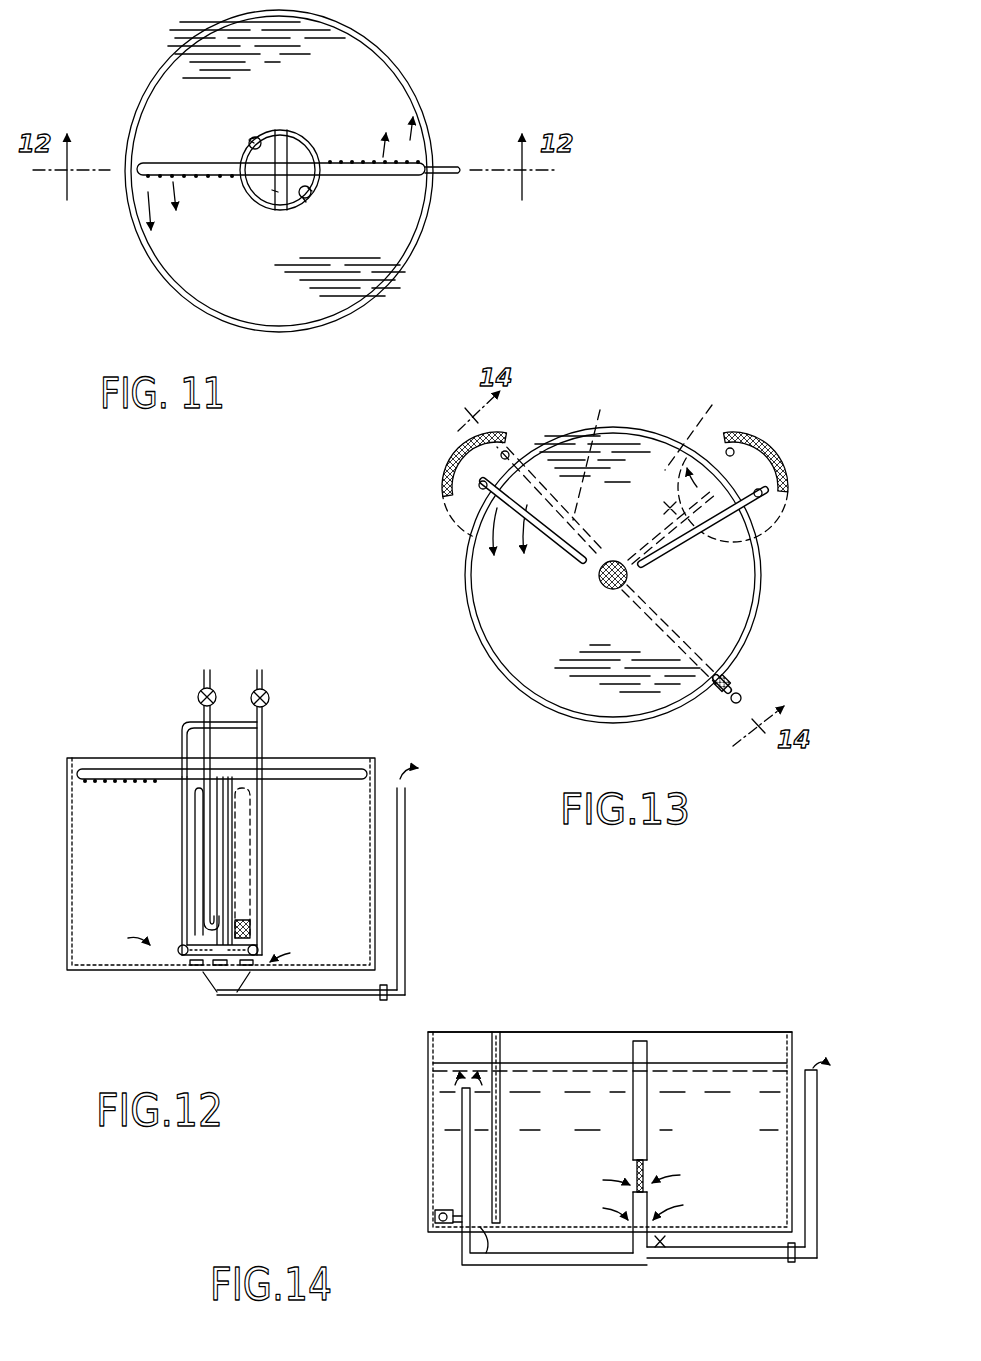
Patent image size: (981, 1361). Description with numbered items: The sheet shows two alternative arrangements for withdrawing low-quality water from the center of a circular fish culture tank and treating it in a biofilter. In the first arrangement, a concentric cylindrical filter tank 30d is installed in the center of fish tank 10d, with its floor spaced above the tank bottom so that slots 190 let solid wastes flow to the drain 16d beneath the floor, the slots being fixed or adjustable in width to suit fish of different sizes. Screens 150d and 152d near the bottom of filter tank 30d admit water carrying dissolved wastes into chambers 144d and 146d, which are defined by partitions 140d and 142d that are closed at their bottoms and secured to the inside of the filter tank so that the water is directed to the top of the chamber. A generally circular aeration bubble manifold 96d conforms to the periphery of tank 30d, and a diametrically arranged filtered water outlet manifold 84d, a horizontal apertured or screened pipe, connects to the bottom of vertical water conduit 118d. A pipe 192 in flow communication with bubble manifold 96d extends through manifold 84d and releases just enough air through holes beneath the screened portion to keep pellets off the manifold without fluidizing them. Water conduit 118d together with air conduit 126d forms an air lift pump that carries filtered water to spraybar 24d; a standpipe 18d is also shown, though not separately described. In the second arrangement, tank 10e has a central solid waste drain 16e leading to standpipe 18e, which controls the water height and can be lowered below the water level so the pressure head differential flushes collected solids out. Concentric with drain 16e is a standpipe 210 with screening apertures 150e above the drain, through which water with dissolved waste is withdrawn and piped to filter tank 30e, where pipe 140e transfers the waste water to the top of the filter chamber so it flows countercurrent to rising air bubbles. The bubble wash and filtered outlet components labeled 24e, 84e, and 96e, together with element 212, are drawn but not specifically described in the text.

In FIG. 12, the fish tank 10d is at (118, 716).
In FIG. 13, the tank 10e is at (657, 425).
In FIG. 14, the tank 10e is at (435, 1115).
In FIG. 12, the drain 16d is at (218, 990).
In FIG. 13, the central solid waste drain 16e is at (600, 583).
In FIG. 14, the central solid waste drain 16e is at (660, 1258).
In FIG. 12, the outlet pipe 18d is at (417, 826).
In FIG. 13, the standpipe 18e is at (735, 690).
In FIG. 14, the standpipe 18e is at (806, 1066).
In FIG. 11, the spraybar 24d is at (430, 160).
In FIG. 12, the spraybar 24d is at (360, 769).
In FIG. 13, the skimmer arm 24e is at (570, 545).
In FIG. 11, the concentric cylindrical filter tank 30d is at (316, 146).
In FIG. 13, the filter tank 30e is at (455, 461).
In FIG. 14, the filter tank 30e is at (463, 1022).
In FIG. 11, the filtered water outlet manifold 84d is at (291, 137).
In FIG. 13, the pump 84e is at (455, 458).
In FIG. 14, the pump 84e is at (445, 1227).
In FIG. 11, the aeration bubble manifold 96d is at (305, 201).
In FIG. 12, the aeration bubble manifold 96d is at (184, 953).
In FIG. 13, the supply line 96e is at (462, 529).
In FIG. 14, the supply line 96e is at (485, 1225).
In FIG. 12, the water conduit 118d is at (222, 877).
In FIG. 12, the air conduit 126d is at (193, 807).
In FIG. 11, the partition 140d is at (257, 137).
In FIG. 12, the partition 140d is at (193, 862).
In FIG. 13, the pipe 140e is at (523, 432).
In FIG. 14, the pipe 140e is at (460, 1178).
In FIG. 11, the partition 142d is at (311, 191).
In FIG. 12, the partition 142d is at (243, 827).
In FIG. 11, the chamber 144d is at (252, 141).
In FIG. 11, the chamber 146d is at (312, 196).
In FIG. 11, the screen 150d is at (249, 143).
In FIG. 14, the screening apertures 150e is at (652, 1178).
In FIG. 12, the screen 152d is at (245, 930).
In FIG. 12, the slots 190 is at (196, 968).
In FIG. 11, the pipe 192 is at (275, 191).
In FIG. 12, the pipe 192 is at (235, 968).
In FIG. 14, the standpipe 210 is at (638, 1040).
In FIG. 13, the alternate arm position 212 is at (628, 527).